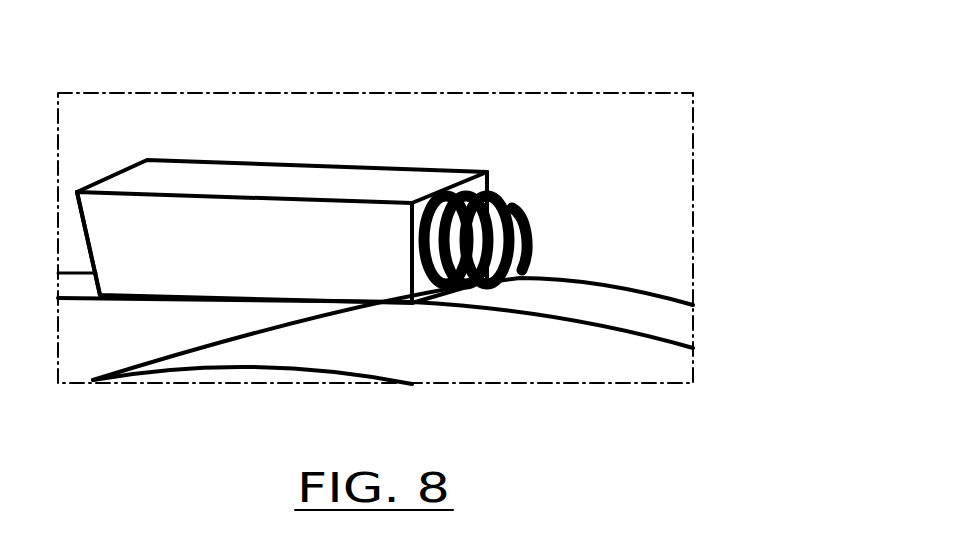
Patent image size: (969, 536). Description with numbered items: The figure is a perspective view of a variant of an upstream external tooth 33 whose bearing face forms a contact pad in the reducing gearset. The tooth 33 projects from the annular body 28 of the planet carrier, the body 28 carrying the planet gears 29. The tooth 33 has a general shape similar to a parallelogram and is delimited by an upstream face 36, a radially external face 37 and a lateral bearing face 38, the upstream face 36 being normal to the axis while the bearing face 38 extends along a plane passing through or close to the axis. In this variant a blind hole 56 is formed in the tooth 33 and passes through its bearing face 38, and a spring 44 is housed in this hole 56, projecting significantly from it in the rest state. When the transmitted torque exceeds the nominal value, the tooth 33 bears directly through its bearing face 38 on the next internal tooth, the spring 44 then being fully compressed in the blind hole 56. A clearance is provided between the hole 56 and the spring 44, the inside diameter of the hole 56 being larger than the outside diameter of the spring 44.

The annular body 28 is at (186, 332).
The planet gears 29 is at (453, 352).
The upstream external tooth 33 is at (296, 253).
The upstream face 36 is at (133, 206).
The radially external face 37 is at (172, 178).
The lateral bearing face 38 is at (488, 183).
The spring 44 is at (493, 283).
The blind hole 56 is at (425, 200).